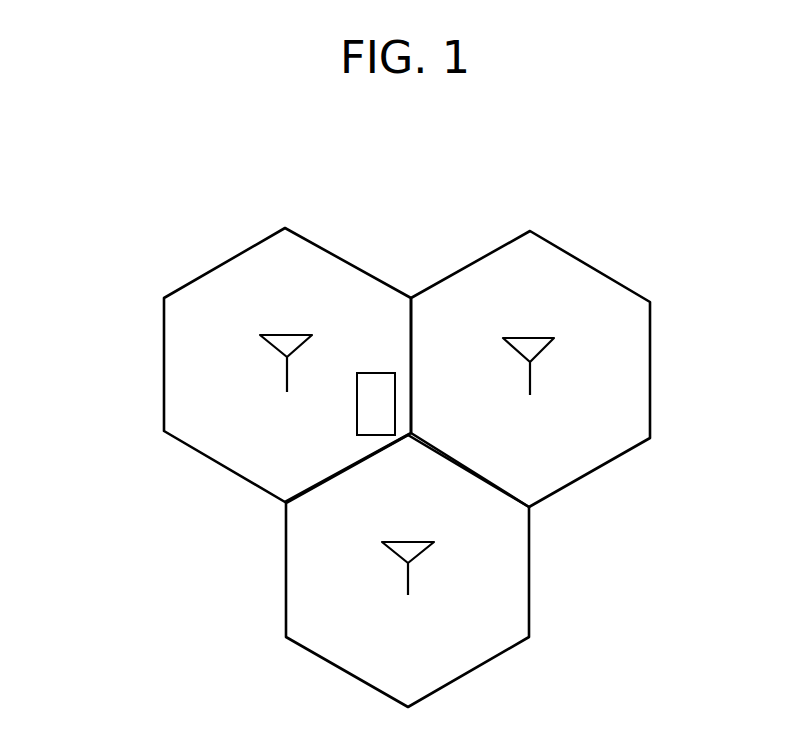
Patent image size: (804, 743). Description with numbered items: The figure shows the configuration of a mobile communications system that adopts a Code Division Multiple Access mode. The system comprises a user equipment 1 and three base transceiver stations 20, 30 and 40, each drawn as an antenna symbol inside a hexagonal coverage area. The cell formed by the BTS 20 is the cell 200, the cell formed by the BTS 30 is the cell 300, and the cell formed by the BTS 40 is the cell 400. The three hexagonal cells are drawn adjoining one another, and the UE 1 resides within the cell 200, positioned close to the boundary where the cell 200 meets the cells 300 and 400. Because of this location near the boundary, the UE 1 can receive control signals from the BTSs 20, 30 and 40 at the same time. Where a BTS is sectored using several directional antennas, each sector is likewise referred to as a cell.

The user equipment 1 is at (378, 373).
The base transceiver station 20 is at (279, 336).
The base transceiver station 30 is at (525, 338).
The base transceiver station 40 is at (403, 542).
The cell 200 is at (164, 334).
The cell 300 is at (610, 278).
The cell 400 is at (529, 571).